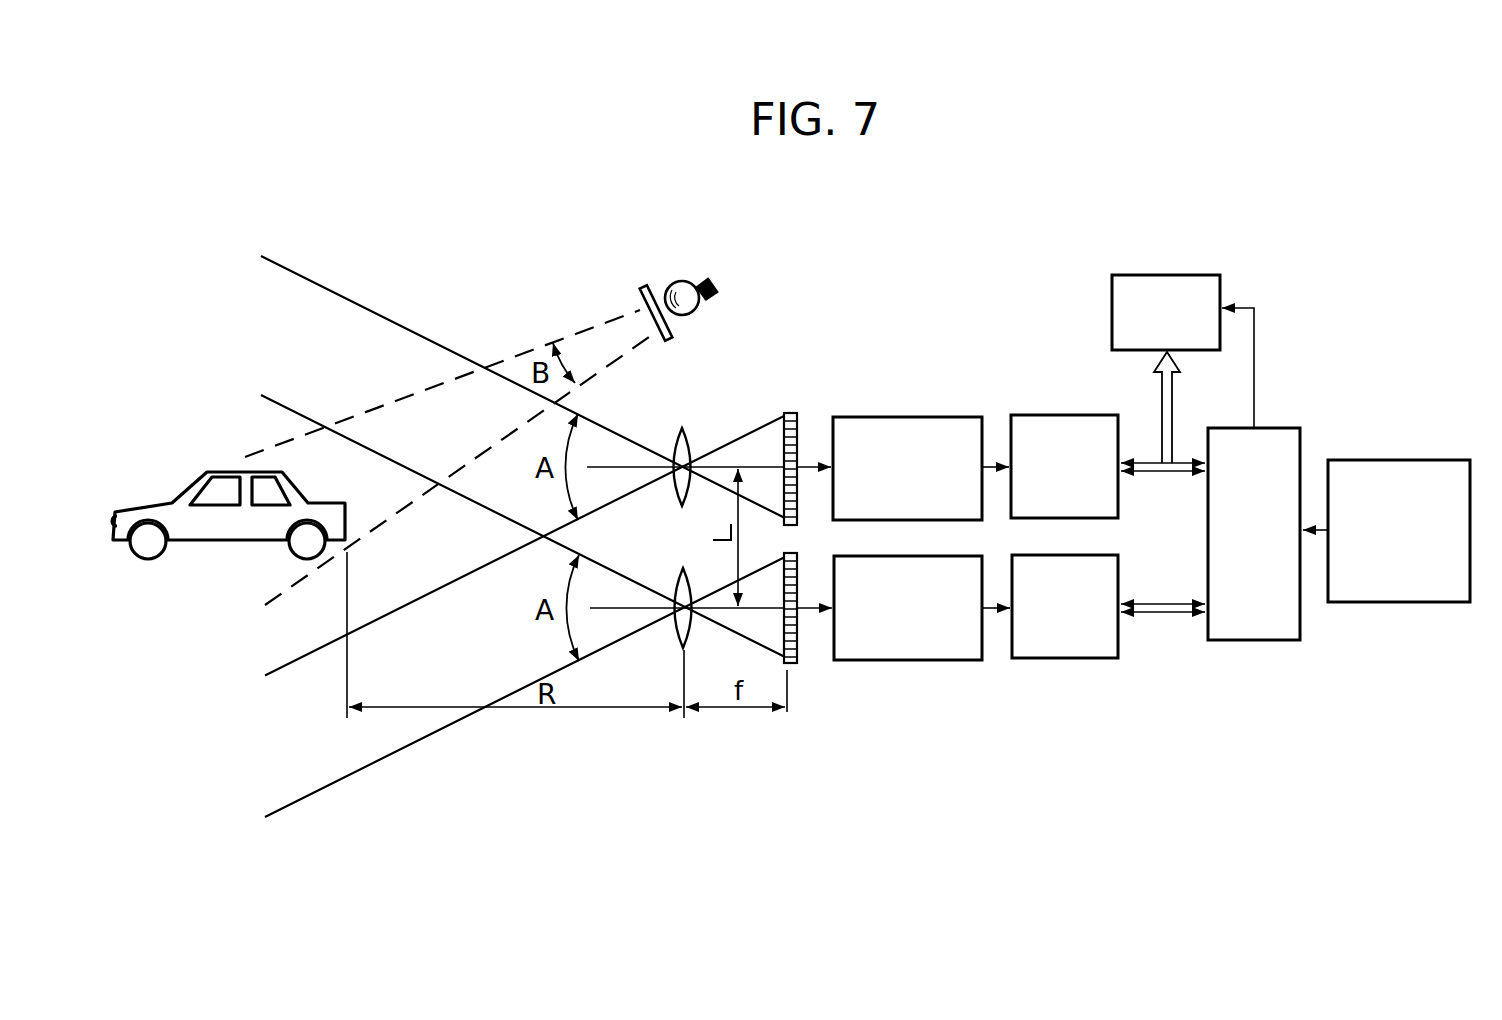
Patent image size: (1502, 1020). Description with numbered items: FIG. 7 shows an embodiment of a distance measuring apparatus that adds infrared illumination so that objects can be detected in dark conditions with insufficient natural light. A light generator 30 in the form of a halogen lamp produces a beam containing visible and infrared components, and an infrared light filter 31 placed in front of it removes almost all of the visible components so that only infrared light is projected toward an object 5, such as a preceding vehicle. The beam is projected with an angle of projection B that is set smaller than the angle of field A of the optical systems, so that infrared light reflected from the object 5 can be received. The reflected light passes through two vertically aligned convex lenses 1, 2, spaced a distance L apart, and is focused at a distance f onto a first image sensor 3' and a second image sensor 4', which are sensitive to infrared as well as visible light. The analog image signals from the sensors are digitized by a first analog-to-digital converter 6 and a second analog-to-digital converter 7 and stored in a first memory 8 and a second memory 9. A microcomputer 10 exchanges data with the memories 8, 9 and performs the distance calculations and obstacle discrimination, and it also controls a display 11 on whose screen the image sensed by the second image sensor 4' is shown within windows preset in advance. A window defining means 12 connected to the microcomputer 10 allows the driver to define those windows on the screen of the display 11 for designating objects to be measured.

The convex lens 1 is at (676, 580).
The convex lens 2 is at (688, 433).
The first image sensor 3' is at (811, 633).
The second image sensor 4' is at (806, 446).
The object 5 is at (152, 500).
The first analog-to-digital converter 6 is at (928, 661).
The second analog-to-digital converter 7 is at (920, 416).
The first memory 8 is at (1078, 659).
The second memory 9 is at (1068, 414).
The microcomputer 10 is at (1260, 641).
The display 11 is at (1196, 274).
The window defining means 12 is at (1360, 459).
The light generator 30 is at (690, 282).
The infrared light filter 31 is at (646, 284).